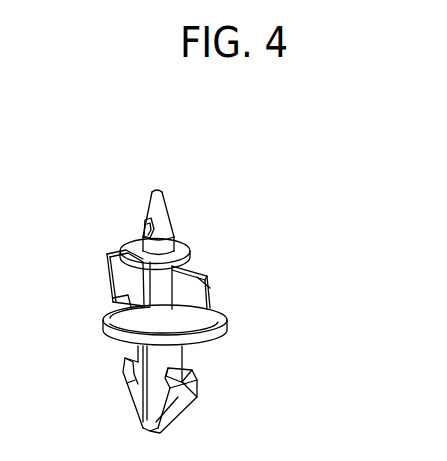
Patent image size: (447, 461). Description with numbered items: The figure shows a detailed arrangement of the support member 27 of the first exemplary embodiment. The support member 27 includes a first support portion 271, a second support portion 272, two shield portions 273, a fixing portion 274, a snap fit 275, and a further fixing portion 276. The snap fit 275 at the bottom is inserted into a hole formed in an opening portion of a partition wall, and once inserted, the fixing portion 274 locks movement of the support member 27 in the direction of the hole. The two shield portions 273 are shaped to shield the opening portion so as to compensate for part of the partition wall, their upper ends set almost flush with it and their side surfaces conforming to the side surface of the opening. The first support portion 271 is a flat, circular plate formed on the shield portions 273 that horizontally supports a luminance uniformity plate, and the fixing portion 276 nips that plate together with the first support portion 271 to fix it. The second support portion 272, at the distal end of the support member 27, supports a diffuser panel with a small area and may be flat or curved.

The support member 27 is at (325, 118).
The first support portion 271 is at (180, 245).
The second support portion 272 is at (157, 188).
The shield portion 273 is at (187, 288).
The fixing portion 274 is at (213, 328).
The snap fit 275 is at (193, 397).
The fixing portion 276 is at (145, 233).